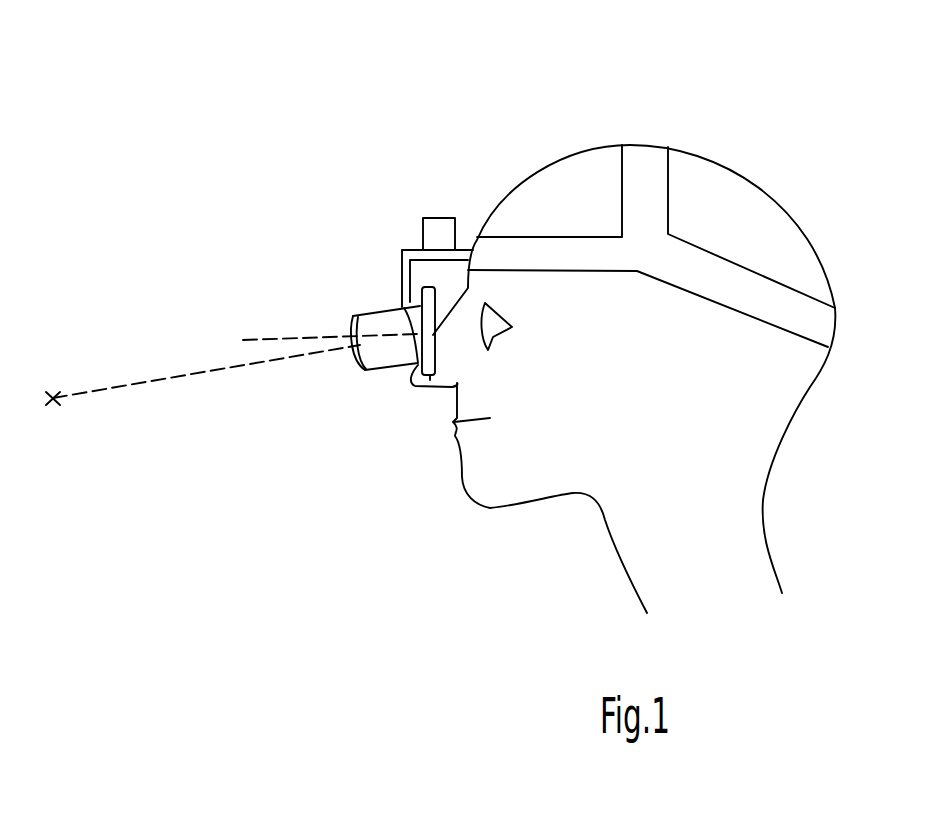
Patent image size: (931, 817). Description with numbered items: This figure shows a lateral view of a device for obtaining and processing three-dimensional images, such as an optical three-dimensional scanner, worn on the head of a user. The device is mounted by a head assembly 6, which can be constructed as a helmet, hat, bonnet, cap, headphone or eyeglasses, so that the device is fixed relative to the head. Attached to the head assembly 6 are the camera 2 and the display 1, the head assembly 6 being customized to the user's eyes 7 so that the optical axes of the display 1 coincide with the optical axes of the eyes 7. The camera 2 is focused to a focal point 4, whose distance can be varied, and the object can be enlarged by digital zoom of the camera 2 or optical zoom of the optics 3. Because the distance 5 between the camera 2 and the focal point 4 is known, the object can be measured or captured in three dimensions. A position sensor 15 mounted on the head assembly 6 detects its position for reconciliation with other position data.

The display 1 is at (430, 380).
The camera 2 is at (383, 352).
The optics 3 is at (352, 322).
The focal point 4 is at (53, 398).
The distance 5 is at (163, 381).
The head assembly 6 is at (643, 163).
The eyes 7 is at (495, 340).
The position sensor 15 is at (440, 230).